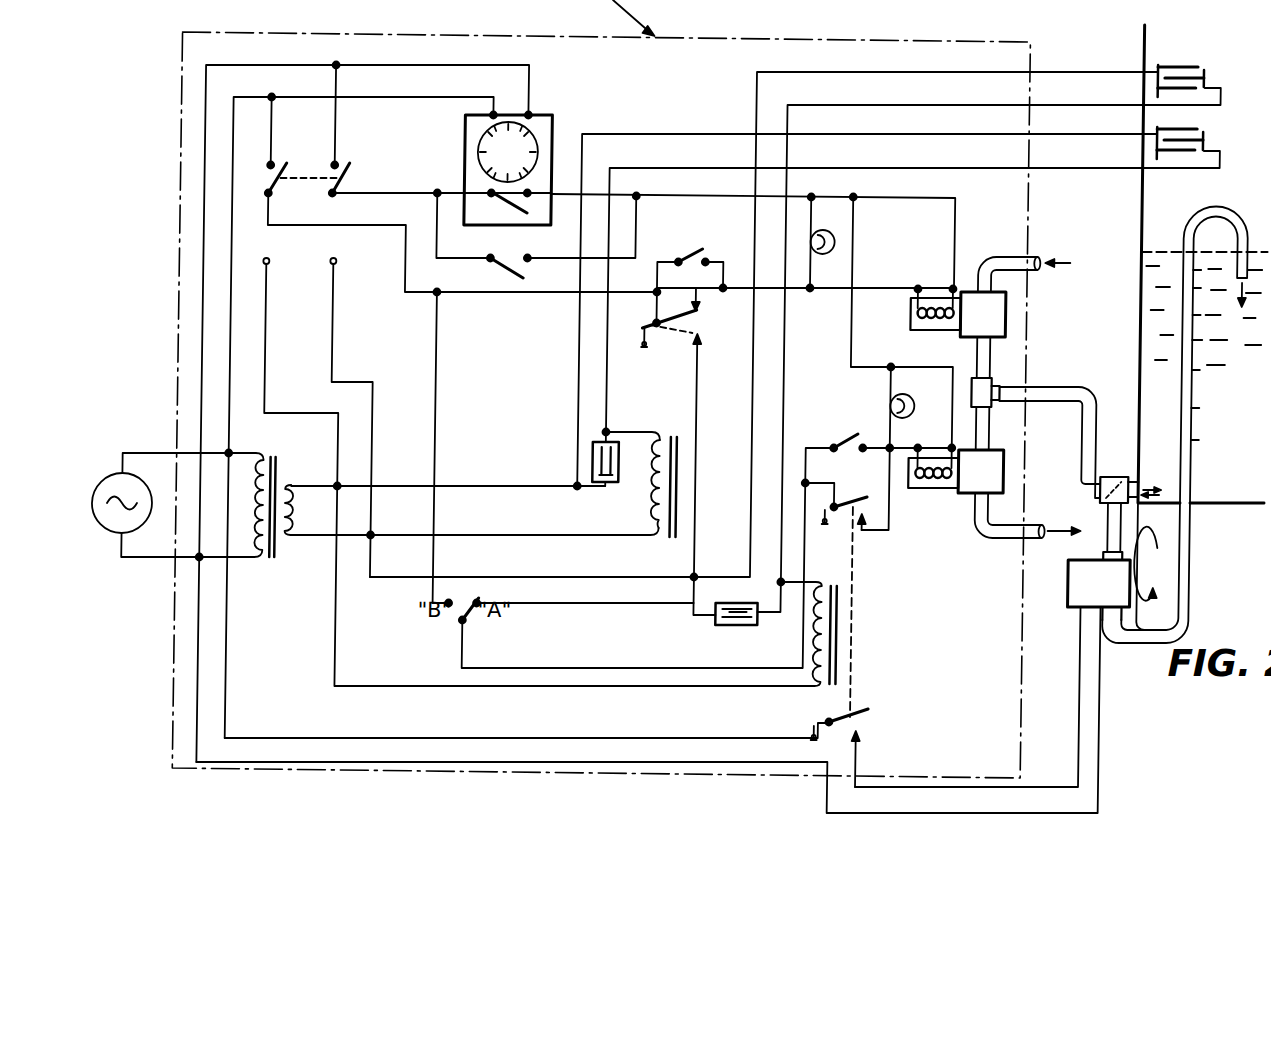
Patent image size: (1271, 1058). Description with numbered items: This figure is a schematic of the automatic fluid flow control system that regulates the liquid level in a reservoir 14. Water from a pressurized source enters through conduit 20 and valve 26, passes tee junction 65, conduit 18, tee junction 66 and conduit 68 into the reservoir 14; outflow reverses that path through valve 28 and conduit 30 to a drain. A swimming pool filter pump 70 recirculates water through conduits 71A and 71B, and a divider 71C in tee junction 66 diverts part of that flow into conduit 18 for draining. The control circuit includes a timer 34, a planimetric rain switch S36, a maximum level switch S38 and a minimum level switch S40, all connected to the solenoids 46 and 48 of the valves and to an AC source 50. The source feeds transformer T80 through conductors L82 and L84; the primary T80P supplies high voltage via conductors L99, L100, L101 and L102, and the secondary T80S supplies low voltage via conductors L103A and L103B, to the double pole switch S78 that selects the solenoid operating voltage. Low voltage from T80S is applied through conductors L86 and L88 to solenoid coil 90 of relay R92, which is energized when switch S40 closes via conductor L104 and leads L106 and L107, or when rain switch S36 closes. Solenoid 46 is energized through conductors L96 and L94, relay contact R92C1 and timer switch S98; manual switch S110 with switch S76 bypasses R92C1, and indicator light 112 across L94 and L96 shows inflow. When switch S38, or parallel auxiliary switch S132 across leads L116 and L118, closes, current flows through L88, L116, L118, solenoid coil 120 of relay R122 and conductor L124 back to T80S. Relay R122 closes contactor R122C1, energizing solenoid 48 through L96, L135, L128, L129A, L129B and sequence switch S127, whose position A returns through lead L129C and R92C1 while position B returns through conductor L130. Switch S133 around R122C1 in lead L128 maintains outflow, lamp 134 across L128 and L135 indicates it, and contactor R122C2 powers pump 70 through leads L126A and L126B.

The reservoir 14 is at (1247, 436).
The flexible conduit 18 is at (1043, 388).
The flexible conduit 20 is at (1018, 257).
The electromagnetically actuated valve 26 is at (1012, 318).
The valve 28 is at (1012, 480).
The conduit 30 is at (997, 437).
The timer 34 is at (462, 124).
The solenoid 46 is at (956, 330).
The solenoid 48 is at (950, 488).
The source of AC voltage 50 is at (118, 478).
The tee junction 65 is at (998, 403).
The tee junction 66 is at (1112, 504).
The conduit 68 is at (1122, 477).
The swimming pool filter pump 70 is at (1076, 560).
The conduit 71A is at (1116, 542).
The conduit 71B is at (1198, 553).
The divider 71C is at (1135, 506).
The solenoid coil 90 is at (660, 493).
The indicator light 112 is at (836, 232).
The solenoid coil 120 is at (845, 620).
The indicator lamp 134 is at (923, 392).
The planimetric rain switch S36 is at (599, 452).
The maximum level planimetric switch S38 is at (1185, 65).
The minimum level planimetric switch S40 is at (1208, 140).
The switch S76 is at (510, 271).
The double pole double throw switch S78 is at (318, 163).
The timer switch S98 is at (508, 212).
The switch S110 is at (697, 251).
The sequence switch S127 is at (465, 624).
The auxiliary planimetric switch S132 is at (745, 626).
The switch S133 is at (860, 436).
The transformer T80 is at (289, 537).
The transformer primary T80P is at (262, 545).
The transformer secondary T80S is at (305, 490).
The relay R92 is at (648, 512).
The relay contact R92C1 is at (688, 313).
The relay R122 is at (853, 653).
The relay contactor R122C1 is at (882, 506).
The relay contactor R122C2 is at (878, 710).
The conductor L82 is at (170, 453).
The conductor L84 is at (170, 558).
The conductor L86 is at (500, 486).
The conductor L88 is at (505, 535).
The conductor L94 is at (407, 268).
The conductor L96 is at (470, 190).
The conductor L99 is at (302, 65).
The conductor L100 is at (339, 116).
The conductor L101 is at (262, 97).
The conductor L102 is at (274, 138).
The conductor L103A is at (370, 382).
The conductor L103B is at (345, 413).
The conductor L104 is at (905, 134).
The lead L106 is at (905, 168).
The lead L107 is at (656, 432).
The conductor L116 is at (903, 72).
The conductor L118 is at (903, 105).
The conductor L124 is at (428, 686).
The lead L126A is at (562, 738).
The lead L126B is at (838, 797).
The lead L128 is at (907, 449).
The conductor L129A is at (878, 532).
The lead L129B is at (836, 478).
The lead L129C is at (584, 617).
The conductor L130 is at (445, 320).
The conductor L135 is at (926, 367).